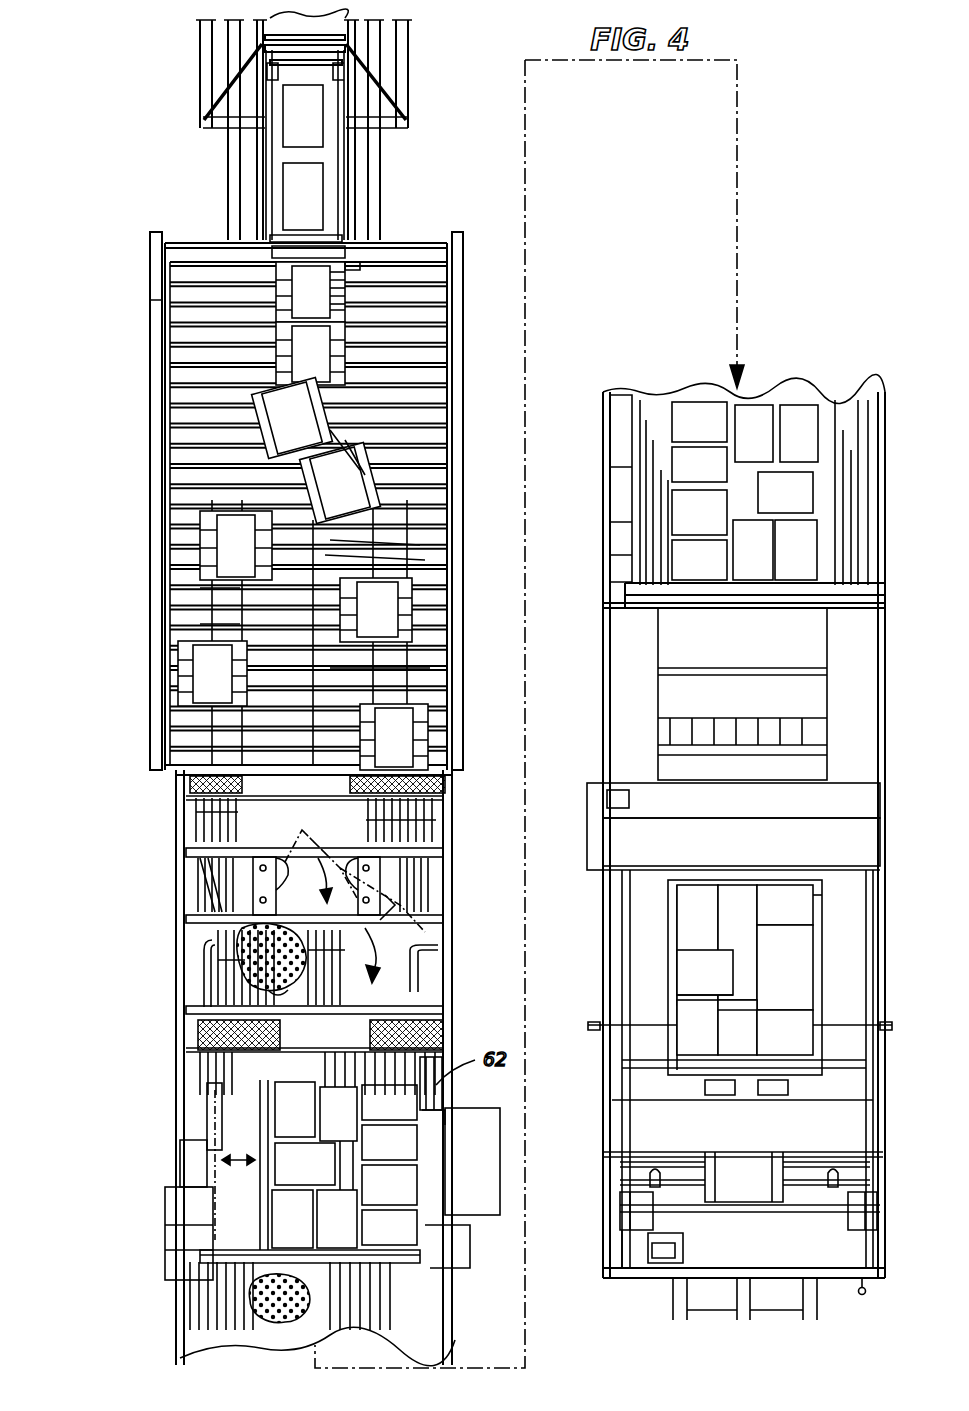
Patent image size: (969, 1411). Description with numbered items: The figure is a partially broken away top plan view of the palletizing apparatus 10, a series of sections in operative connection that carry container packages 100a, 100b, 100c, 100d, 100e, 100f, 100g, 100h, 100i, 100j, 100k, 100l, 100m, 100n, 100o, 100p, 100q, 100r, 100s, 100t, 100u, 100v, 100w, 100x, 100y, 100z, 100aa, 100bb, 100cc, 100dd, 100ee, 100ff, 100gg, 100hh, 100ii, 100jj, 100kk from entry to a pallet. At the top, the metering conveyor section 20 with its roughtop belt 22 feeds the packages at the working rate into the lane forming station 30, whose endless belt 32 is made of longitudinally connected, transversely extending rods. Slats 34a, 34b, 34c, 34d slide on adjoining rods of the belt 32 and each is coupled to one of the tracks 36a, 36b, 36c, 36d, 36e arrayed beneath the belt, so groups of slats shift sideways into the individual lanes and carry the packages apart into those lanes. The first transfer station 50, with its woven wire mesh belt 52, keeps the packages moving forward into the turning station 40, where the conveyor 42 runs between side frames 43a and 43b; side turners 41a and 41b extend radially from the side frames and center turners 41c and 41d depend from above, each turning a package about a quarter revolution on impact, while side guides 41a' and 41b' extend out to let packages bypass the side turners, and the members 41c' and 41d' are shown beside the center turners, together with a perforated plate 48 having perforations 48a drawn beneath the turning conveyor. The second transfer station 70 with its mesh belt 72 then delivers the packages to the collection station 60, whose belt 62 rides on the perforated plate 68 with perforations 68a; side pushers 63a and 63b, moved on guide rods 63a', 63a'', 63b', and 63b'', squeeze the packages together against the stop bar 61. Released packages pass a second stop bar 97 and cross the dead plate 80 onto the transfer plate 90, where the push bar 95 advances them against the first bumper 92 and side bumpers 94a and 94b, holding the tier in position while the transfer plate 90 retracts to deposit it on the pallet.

The palletizing apparatus 10 is at (118, 240).
The metering conveyor section 20 is at (258, 140).
The roughtop belt 22 is at (320, 22).
The lane forming station 30 is at (158, 340).
The endless belt 32 is at (210, 325).
The slat 34a is at (378, 252).
The slat 34b is at (345, 275).
The slat 34c is at (345, 290).
The slat 34d is at (345, 305).
The track 36a is at (210, 590).
The track 36b is at (210, 625).
The track 36c is at (400, 540).
The track 36d is at (380, 555).
The track 36e is at (375, 670).
The turning station 40 is at (200, 930).
The side turner 41a is at (434, 962).
The side guide 41a' is at (443, 916).
The side turner 41b is at (229, 967).
The side guide 41b' is at (167, 885).
The center turner 41c is at (355, 871).
The transfer element 41c' is at (430, 886).
The center turner 41d is at (288, 857).
The transfer element 41d' is at (192, 881).
The conveyor 42 is at (200, 850).
The side frame 43a is at (430, 950).
The side frame 43b is at (210, 950).
The stop member 48 is at (250, 945).
The stop member portion 48a is at (275, 985).
The first transfer station 50 is at (195, 778).
The woven wire mesh belt 52 is at (195, 797).
The collection station 60 is at (455, 1142).
The stop bar 61 is at (390, 1258).
The endless belt 62 is at (622, 398).
The side pusher 63a is at (463, 1070).
The guide rod 63a' is at (473, 1251).
The guide rod 63a'' is at (470, 1096).
The side pusher 63b is at (320, 1036).
The guide rod 63b' is at (143, 1210).
The guide rod 63b'' is at (164, 1161).
The plate 68 is at (270, 1295).
The perforation 68a is at (262, 1322).
The second transfer station 70 is at (180, 1045).
The woven wire mesh belt 72 is at (205, 1012).
The dead plate 80 is at (690, 768).
The transfer plate 90 is at (640, 1000).
The first bumper 92 is at (800, 1060).
The side bumper 94a is at (700, 980).
The side bumper 94b is at (800, 960).
The push bar 95 is at (595, 840).
The second stop bar 97 is at (605, 625).
The container package 100a is at (305, 128).
The container package 100b is at (310, 172).
The container package 100c is at (300, 270).
The container package 100d is at (300, 335).
The container package 100e is at (270, 405).
The container package 100f is at (320, 475).
The container package 100g is at (235, 540).
The container package 100h is at (375, 620).
The container package 100i is at (205, 678).
The container package 100j is at (395, 738).
The container package 100k is at (300, 1105).
The container package 100l is at (335, 1110).
The container package 100m is at (283, 1177).
The container package 100n is at (368, 1113).
The container package 100o is at (368, 1153).
The container package 100p is at (368, 1195).
The container package 100q is at (295, 1215).
The container package 100r is at (335, 1220).
The container package 100s is at (368, 1238).
The container package 100t is at (678, 432).
The container package 100u is at (678, 475).
The container package 100v is at (678, 522).
The container package 100w is at (700, 565).
The container package 100x is at (755, 430).
The container package 100y is at (800, 430).
The container package 100z is at (764, 504).
The container package 100aa is at (755, 580).
The container package 100bb is at (795, 580).
The container package 100cc is at (700, 905).
The container package 100dd is at (738, 905).
The container package 100ee is at (790, 905).
The container package 100ff is at (820, 930).
The container package 100gg is at (700, 1030).
The container package 100hh is at (782, 990).
The container package 100ii is at (740, 1030).
The container package 100jj is at (708, 975).
The container package 100kk is at (798, 1045).